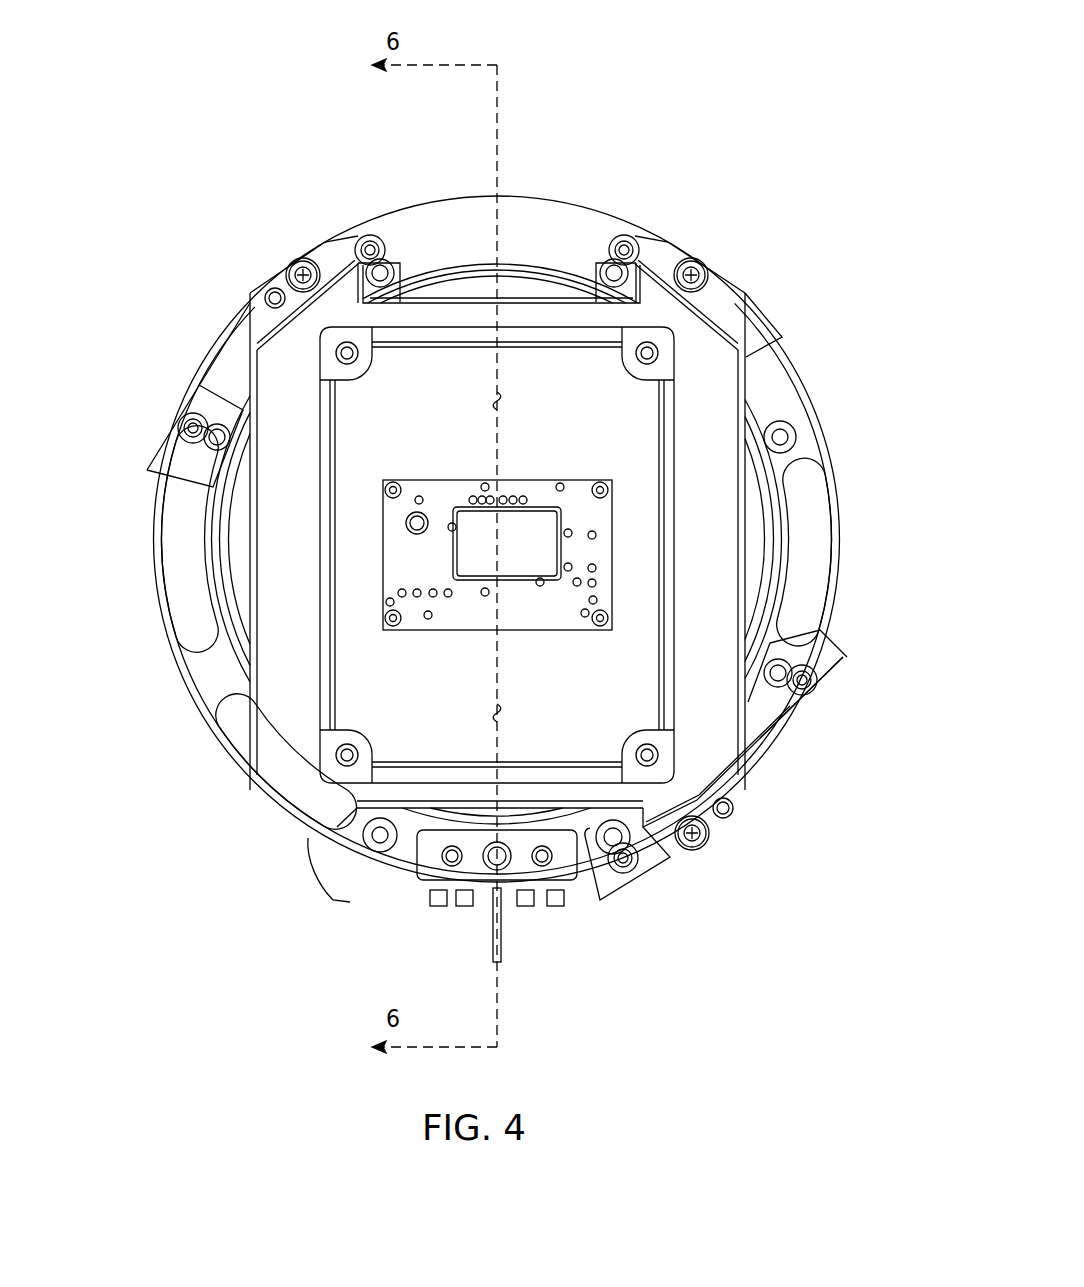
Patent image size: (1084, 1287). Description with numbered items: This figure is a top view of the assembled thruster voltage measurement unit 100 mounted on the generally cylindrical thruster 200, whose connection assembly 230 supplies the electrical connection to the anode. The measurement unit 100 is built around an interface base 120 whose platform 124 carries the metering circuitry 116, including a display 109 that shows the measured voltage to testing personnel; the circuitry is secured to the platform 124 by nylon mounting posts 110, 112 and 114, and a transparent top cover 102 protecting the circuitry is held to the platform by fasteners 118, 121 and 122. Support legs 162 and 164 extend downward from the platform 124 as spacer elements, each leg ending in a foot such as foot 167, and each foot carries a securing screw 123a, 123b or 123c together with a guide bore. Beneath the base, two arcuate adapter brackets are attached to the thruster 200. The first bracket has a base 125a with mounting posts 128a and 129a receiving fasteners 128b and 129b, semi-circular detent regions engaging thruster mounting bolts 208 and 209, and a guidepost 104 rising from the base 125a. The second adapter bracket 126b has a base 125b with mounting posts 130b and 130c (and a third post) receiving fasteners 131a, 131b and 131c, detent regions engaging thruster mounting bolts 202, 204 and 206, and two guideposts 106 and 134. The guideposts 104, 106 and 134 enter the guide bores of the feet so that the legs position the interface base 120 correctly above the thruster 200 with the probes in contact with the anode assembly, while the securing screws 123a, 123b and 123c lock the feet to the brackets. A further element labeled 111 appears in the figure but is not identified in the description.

The thruster voltage measurement unit 100 is at (811, 183).
The top cover 102 is at (640, 418).
The guidepost 104 is at (740, 800).
The guidepost 106 is at (175, 426).
The display 109 is at (555, 515).
The nylon mounting post 110 is at (606, 607).
The board mounting hole 111 is at (610, 482).
The nylon mounting post 112 is at (383, 607).
The nylon mounting post 114 is at (496, 357).
The metering circuitry 116 is at (442, 482).
The fastener 118 is at (330, 752).
The interface base 120 is at (737, 815).
The fastener 121 is at (650, 337).
The fastener 122 is at (434, 262).
The securing screw 123a is at (710, 840).
The securing screw 123b is at (292, 266).
The securing screw 123c is at (706, 266).
The platform 124 is at (220, 487).
The base 125a is at (745, 743).
The base 125b is at (217, 342).
The adapter bracket 126b is at (187, 370).
The mounting post 128a is at (620, 895).
The fastener 128b is at (812, 665).
The mounting post 129a is at (633, 862).
The fastener 129b is at (818, 680).
The mounting post 130b is at (364, 243).
The mounting post 130c is at (614, 258).
The fastener 131a is at (183, 416).
The fastener 131b is at (370, 234).
The fastener 131c is at (630, 238).
The guidepost 134 is at (752, 292).
The support leg 162 is at (782, 757).
The support leg 164 is at (240, 335).
The foot 167 is at (687, 242).
The thruster 200 is at (311, 850).
The thruster mounting bolt 202 is at (152, 474).
The thruster mounting bolt 204 is at (352, 328).
The thruster mounting bolt 206 is at (605, 258).
The thruster mounting bolt 208 is at (668, 873).
The thruster mounting bolt 209 is at (775, 648).
The connection assembly 230 is at (547, 906).